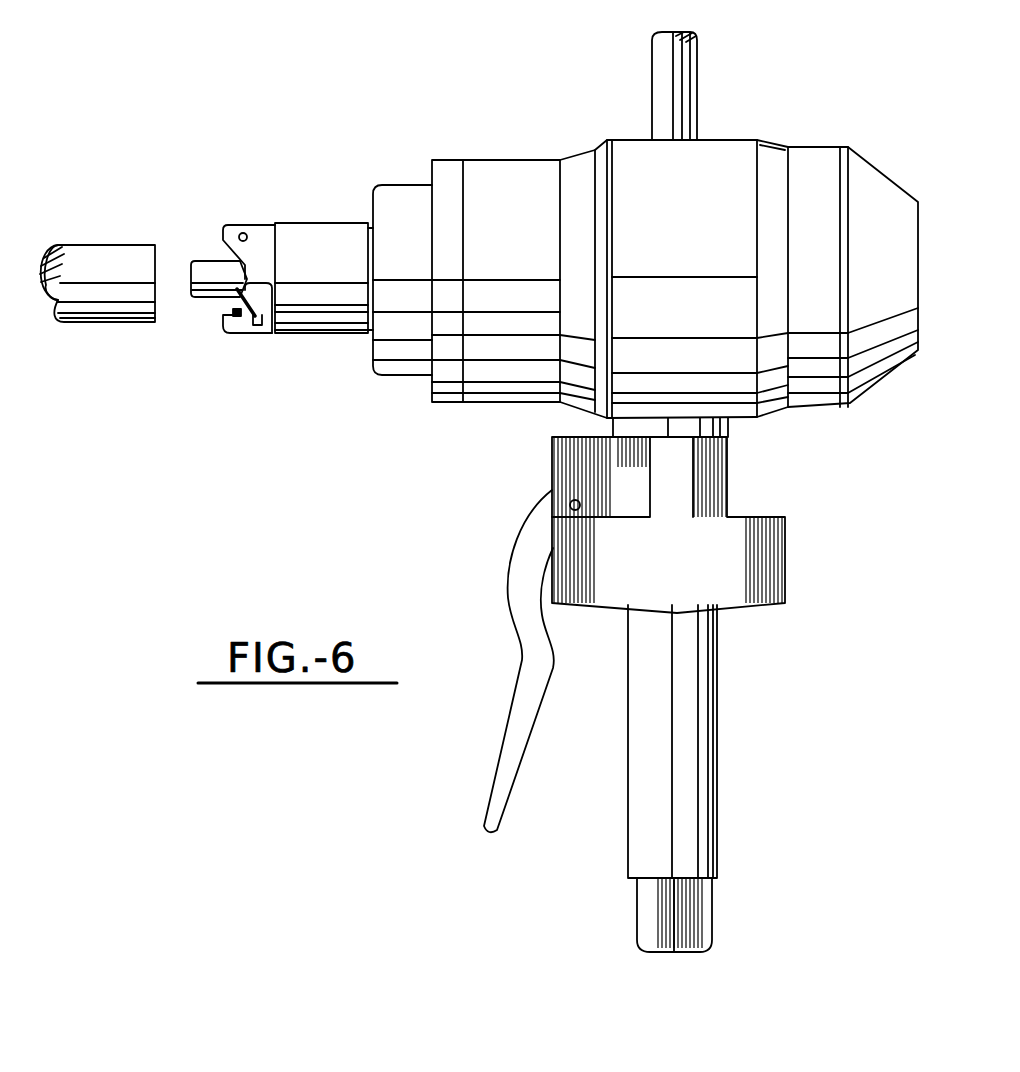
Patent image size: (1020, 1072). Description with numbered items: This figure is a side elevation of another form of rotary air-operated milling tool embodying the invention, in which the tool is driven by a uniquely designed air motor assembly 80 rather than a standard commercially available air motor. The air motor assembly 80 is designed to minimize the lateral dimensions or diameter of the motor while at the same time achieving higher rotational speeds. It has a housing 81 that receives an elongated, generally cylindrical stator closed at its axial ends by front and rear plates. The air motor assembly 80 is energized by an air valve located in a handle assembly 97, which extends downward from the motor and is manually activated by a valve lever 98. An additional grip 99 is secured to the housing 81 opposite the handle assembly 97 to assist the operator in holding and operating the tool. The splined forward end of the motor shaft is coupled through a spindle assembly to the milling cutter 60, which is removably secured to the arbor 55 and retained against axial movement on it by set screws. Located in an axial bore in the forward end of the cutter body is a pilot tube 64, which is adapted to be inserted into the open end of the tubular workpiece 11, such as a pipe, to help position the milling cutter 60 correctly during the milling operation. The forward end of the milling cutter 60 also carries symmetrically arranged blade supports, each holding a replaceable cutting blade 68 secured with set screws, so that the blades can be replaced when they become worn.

The workpiece 11 is at (94, 243).
The pilot tube 64 is at (190, 262).
The milling cutter 60 is at (283, 222).
The cutting blade 68 is at (230, 313).
The arbor 55 is at (357, 240).
The air motor assembly 80 is at (503, 138).
The housing 81 is at (722, 140).
The grip 99 is at (660, 70).
The valve lever 98 is at (520, 562).
The handle assembly 97 is at (690, 735).